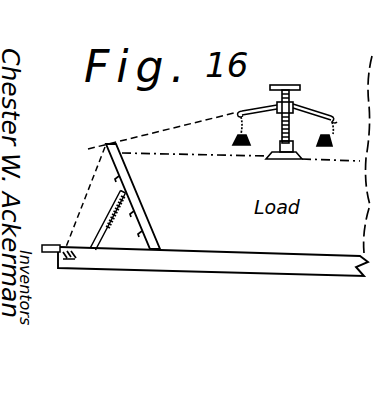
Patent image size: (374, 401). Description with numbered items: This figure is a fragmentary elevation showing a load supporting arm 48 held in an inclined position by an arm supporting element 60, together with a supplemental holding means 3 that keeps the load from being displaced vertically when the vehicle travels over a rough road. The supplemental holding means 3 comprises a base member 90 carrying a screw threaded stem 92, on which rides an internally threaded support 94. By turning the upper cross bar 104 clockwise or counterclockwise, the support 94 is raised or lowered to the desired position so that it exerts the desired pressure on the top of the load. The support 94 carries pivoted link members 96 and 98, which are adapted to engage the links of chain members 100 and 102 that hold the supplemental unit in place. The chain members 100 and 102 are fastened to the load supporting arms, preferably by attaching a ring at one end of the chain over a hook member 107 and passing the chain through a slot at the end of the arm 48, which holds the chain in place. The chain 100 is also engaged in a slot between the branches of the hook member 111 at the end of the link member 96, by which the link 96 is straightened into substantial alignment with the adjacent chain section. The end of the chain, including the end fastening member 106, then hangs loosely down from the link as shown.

The supplemental holding means 3 is at (282, 109).
The load supporting arm 48 is at (94, 149).
The arm supporting element 60 is at (108, 225).
The base member 90 is at (304, 159).
The screw threaded stem 92 is at (290, 124).
The internally threaded support 94 is at (297, 99).
The pivoted link member 96 is at (277, 107).
The pivoted link member 98 is at (335, 120).
The chain member 100 is at (157, 133).
The chain member 102 is at (337, 141).
The upper cross bar 104 is at (283, 84).
The end fastening member 106 is at (233, 141).
The hook member 107 is at (77, 257).
The hook member 111 is at (233, 113).